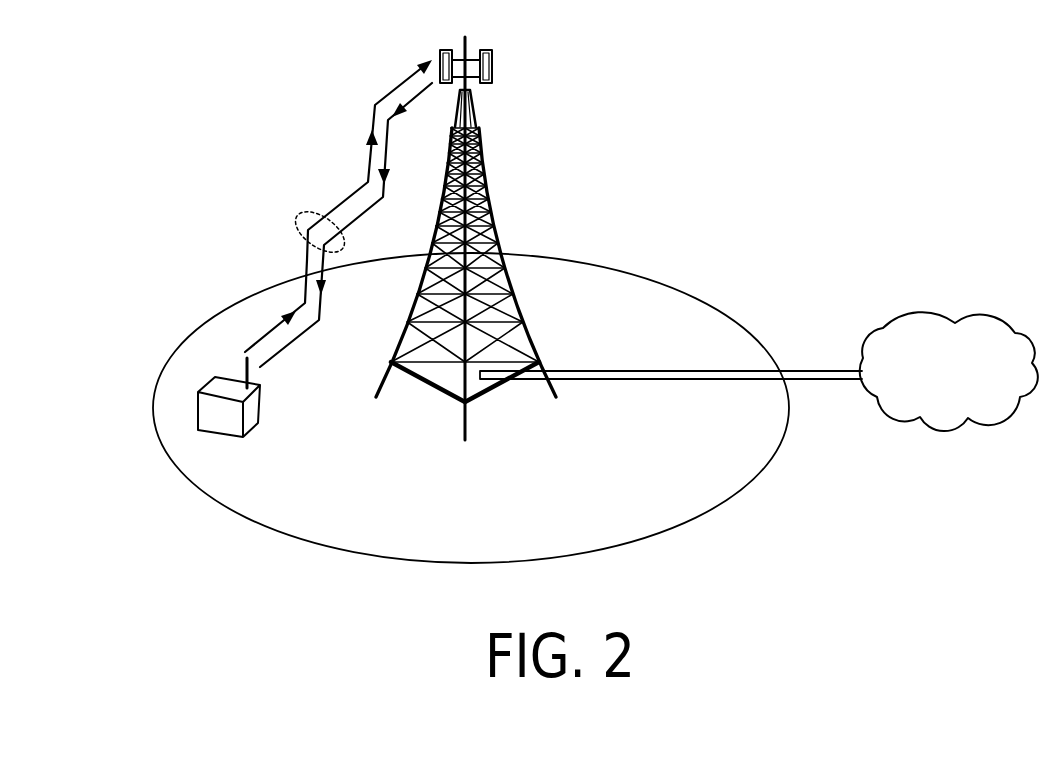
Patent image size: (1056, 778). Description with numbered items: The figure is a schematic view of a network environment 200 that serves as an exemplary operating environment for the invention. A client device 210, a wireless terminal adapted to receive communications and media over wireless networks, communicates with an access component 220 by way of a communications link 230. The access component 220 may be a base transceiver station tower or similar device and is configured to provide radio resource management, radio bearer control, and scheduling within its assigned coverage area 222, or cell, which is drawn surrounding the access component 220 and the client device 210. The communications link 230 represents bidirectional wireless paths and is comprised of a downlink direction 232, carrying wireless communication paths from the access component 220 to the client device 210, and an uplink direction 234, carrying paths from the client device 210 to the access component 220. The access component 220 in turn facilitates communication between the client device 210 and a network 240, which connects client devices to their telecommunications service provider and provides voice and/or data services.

The network environment 200 is at (786, 112).
The client device 210 is at (227, 438).
The access component 220 is at (493, 200).
The coverage area 222 is at (295, 540).
The communications link 230 is at (302, 213).
The downlink direction 232 is at (298, 338).
The uplink direction 234 is at (390, 97).
The network 240 is at (968, 384).